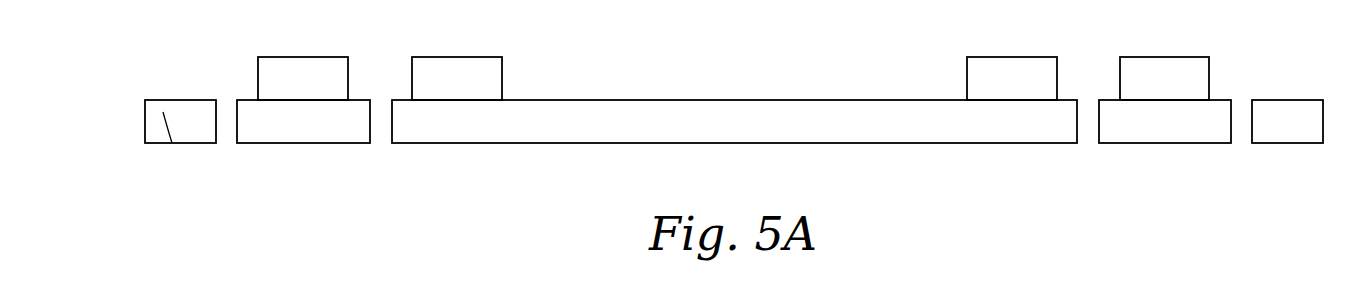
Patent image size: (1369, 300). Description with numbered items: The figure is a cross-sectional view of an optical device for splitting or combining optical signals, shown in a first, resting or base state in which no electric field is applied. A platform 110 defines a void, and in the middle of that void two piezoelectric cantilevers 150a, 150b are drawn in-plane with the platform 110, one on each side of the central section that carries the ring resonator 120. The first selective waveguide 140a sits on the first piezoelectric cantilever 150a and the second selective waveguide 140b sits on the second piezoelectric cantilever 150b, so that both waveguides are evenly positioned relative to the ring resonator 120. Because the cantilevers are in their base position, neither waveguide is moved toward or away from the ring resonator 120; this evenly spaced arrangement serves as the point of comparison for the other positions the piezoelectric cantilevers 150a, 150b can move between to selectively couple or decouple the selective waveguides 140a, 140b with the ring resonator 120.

The platform 110 is at (180, 135).
The ring resonator 120 is at (455, 67).
The first selective waveguide 140a is at (301, 67).
The second selective waveguide 140b is at (1157, 67).
The piezoelectric cantilever 150a is at (302, 135).
The piezoelectric cantilever 150b is at (1166, 135).